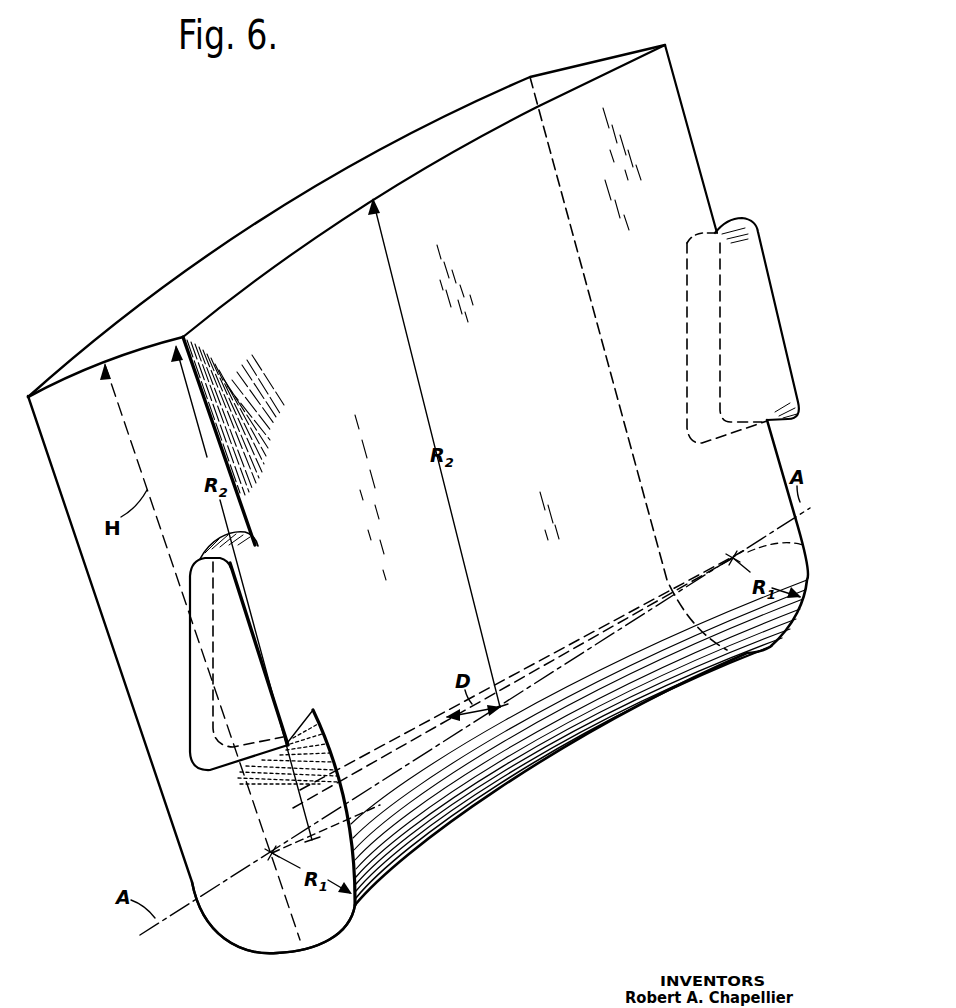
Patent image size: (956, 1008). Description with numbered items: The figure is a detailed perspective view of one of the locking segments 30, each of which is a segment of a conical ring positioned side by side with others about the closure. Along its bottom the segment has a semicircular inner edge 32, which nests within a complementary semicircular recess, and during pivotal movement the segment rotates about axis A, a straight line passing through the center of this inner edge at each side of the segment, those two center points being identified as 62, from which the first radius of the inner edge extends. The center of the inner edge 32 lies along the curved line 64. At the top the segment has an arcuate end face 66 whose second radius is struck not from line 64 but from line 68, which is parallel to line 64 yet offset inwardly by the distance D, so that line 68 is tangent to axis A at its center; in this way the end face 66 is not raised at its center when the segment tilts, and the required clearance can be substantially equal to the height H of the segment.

The locking segment 30 is at (226, 223).
The arcuate end face 66 is at (77, 373).
The center point 62 is at (270, 853).
The curved line 64 is at (392, 755).
The line 68 is at (377, 793).
The semicircular inner edge 32 is at (247, 943).